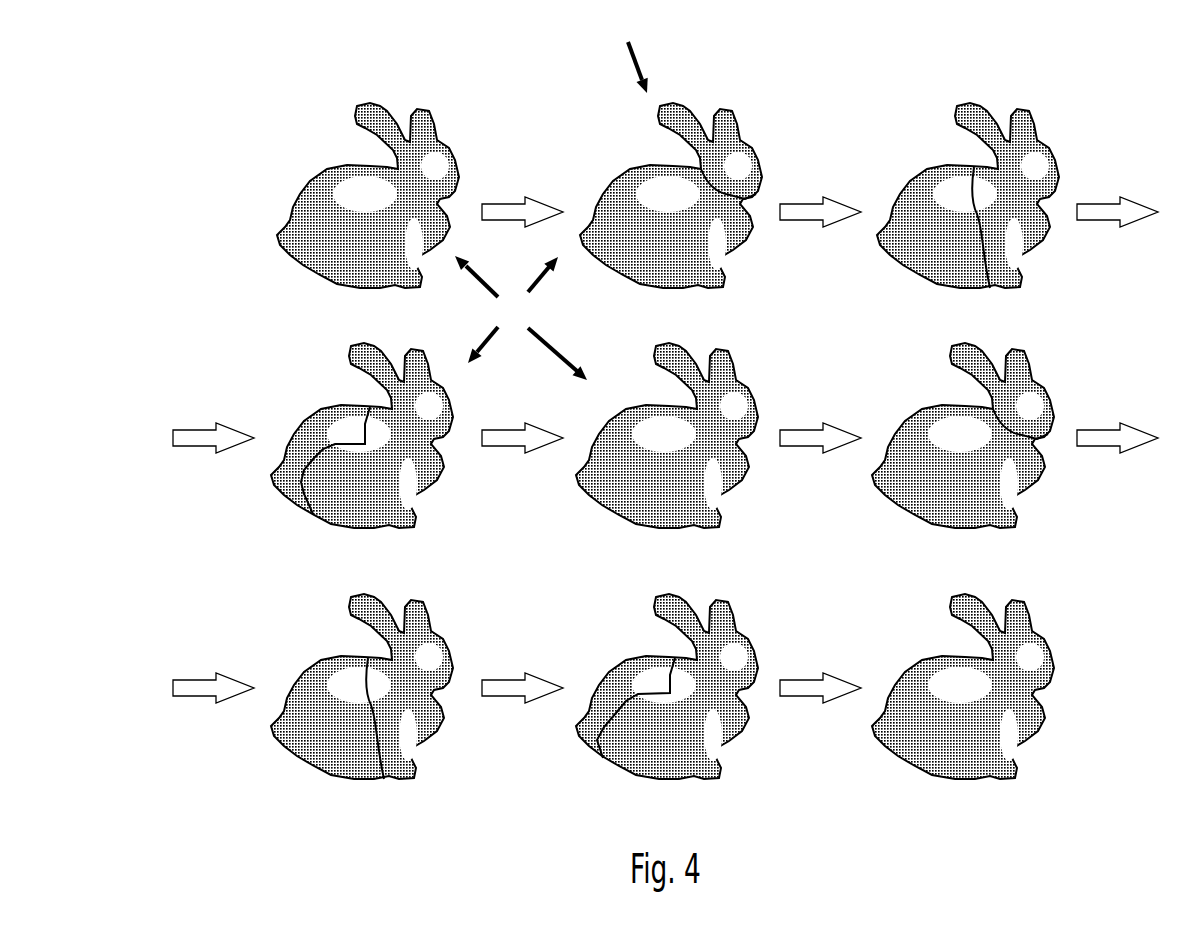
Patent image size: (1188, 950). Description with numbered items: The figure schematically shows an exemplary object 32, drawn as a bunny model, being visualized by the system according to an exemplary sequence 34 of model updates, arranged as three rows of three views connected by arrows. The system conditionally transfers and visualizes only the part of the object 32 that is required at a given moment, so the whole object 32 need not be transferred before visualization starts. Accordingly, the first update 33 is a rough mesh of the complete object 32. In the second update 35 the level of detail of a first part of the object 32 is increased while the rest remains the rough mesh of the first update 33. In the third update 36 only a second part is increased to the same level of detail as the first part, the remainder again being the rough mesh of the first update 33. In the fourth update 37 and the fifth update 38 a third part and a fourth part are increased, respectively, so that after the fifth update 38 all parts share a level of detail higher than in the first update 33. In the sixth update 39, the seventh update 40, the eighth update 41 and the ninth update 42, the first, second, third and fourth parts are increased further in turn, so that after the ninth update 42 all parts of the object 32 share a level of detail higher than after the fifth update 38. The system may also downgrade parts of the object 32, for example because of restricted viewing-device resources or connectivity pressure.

The object 32 is at (521, 318).
The first update 33 is at (330, 165).
The sequence of model updates 34 is at (630, 52).
The second update 35 is at (631, 167).
The third update 36 is at (930, 165).
The fourth update 37 is at (327, 403).
The fifth update 38 is at (633, 402).
The sixth update 39 is at (925, 402).
The seventh update 40 is at (328, 653).
The eighth update 41 is at (625, 653).
The ninth update 42 is at (927, 652).